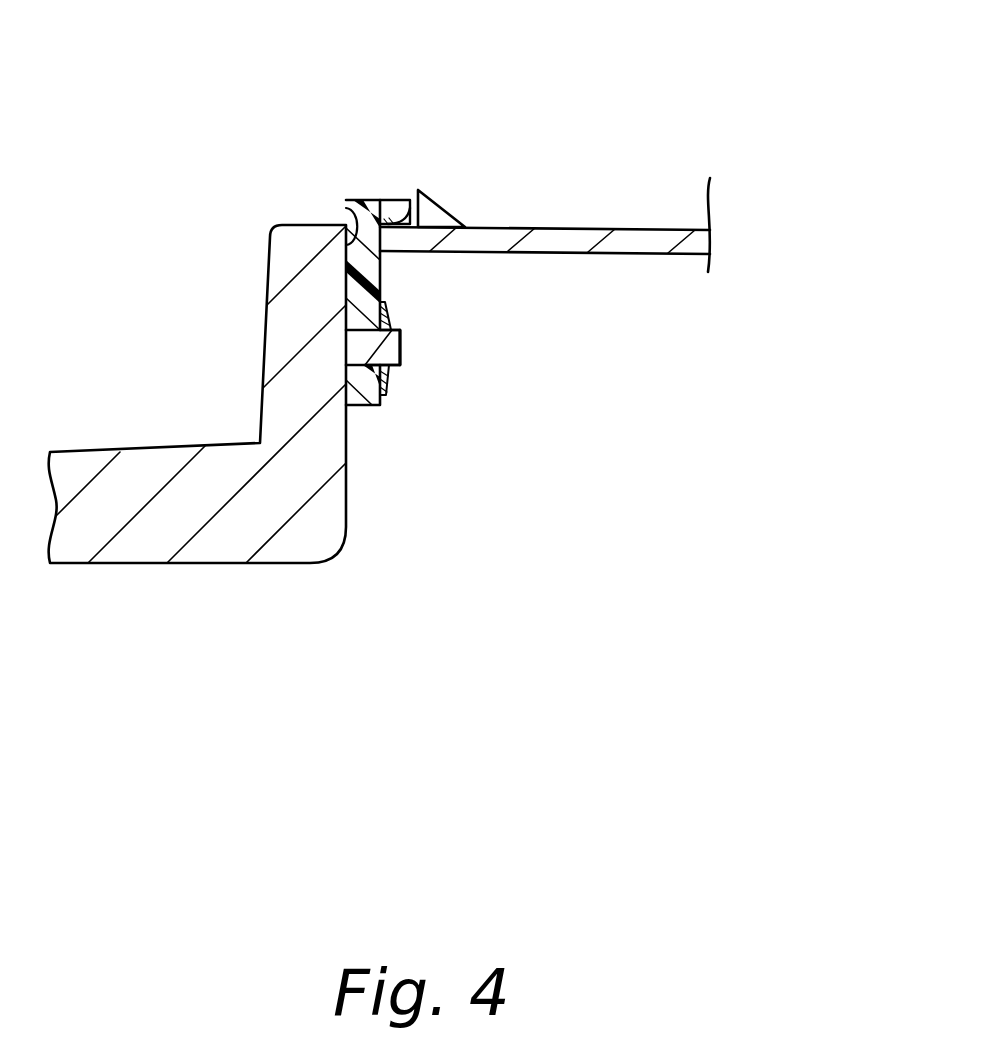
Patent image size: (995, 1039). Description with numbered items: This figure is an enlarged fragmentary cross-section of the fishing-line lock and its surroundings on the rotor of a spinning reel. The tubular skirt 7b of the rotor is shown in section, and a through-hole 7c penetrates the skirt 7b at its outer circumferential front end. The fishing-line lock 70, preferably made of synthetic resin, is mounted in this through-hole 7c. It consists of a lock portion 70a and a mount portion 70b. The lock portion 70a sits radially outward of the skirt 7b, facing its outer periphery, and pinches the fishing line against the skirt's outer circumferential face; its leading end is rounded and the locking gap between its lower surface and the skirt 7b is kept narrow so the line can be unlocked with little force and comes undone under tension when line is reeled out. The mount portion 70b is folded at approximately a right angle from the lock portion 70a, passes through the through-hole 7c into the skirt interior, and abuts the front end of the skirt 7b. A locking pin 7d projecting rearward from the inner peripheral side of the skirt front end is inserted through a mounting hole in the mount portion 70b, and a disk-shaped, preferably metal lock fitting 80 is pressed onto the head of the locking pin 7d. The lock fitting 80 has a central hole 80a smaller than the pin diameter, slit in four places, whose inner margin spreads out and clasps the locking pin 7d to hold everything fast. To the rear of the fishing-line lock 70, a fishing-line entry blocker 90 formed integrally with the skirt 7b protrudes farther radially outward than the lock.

The skirt 7b is at (635, 227).
The through-hole 7c is at (347, 206).
The locking pin 7d is at (402, 352).
The fishing-line lock 70 is at (375, 200).
The lock portion 70a is at (407, 200).
The mount portion 70b is at (380, 290).
The lock fitting 80 is at (387, 376).
The hole 80a is at (398, 335).
The fishing-line entry blocker 90 is at (443, 208).